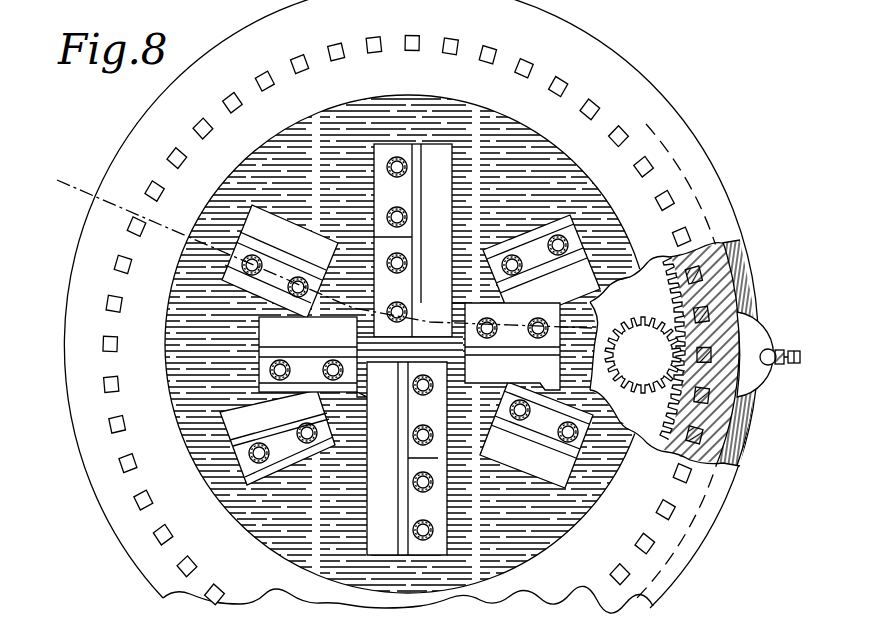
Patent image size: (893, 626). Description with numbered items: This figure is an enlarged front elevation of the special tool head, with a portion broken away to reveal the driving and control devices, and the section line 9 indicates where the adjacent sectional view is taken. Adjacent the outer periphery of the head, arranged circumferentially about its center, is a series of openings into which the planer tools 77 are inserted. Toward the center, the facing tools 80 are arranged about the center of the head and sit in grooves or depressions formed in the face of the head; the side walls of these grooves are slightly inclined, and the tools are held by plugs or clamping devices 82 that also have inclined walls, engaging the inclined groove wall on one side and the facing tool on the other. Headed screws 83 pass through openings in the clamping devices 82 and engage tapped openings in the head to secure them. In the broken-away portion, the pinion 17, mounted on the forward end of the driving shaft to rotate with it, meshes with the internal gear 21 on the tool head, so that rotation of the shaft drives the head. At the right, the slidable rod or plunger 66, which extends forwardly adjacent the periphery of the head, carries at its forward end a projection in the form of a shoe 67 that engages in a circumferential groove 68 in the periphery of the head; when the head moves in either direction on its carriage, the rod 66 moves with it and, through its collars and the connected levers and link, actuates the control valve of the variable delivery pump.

The section line 9- 9 is at (70, 205).
The pinion 17 is at (648, 372).
The internal gear 21 is at (660, 446).
The slidable rod or plunger 66 is at (776, 368).
The shoe 67 is at (760, 340).
The circumferential groove 68 is at (736, 292).
The planer tools 77 is at (147, 498).
The facing tools 80 is at (410, 349).
The plugs or clamping devices 82 is at (471, 267).
The headed screws 83 is at (559, 243).